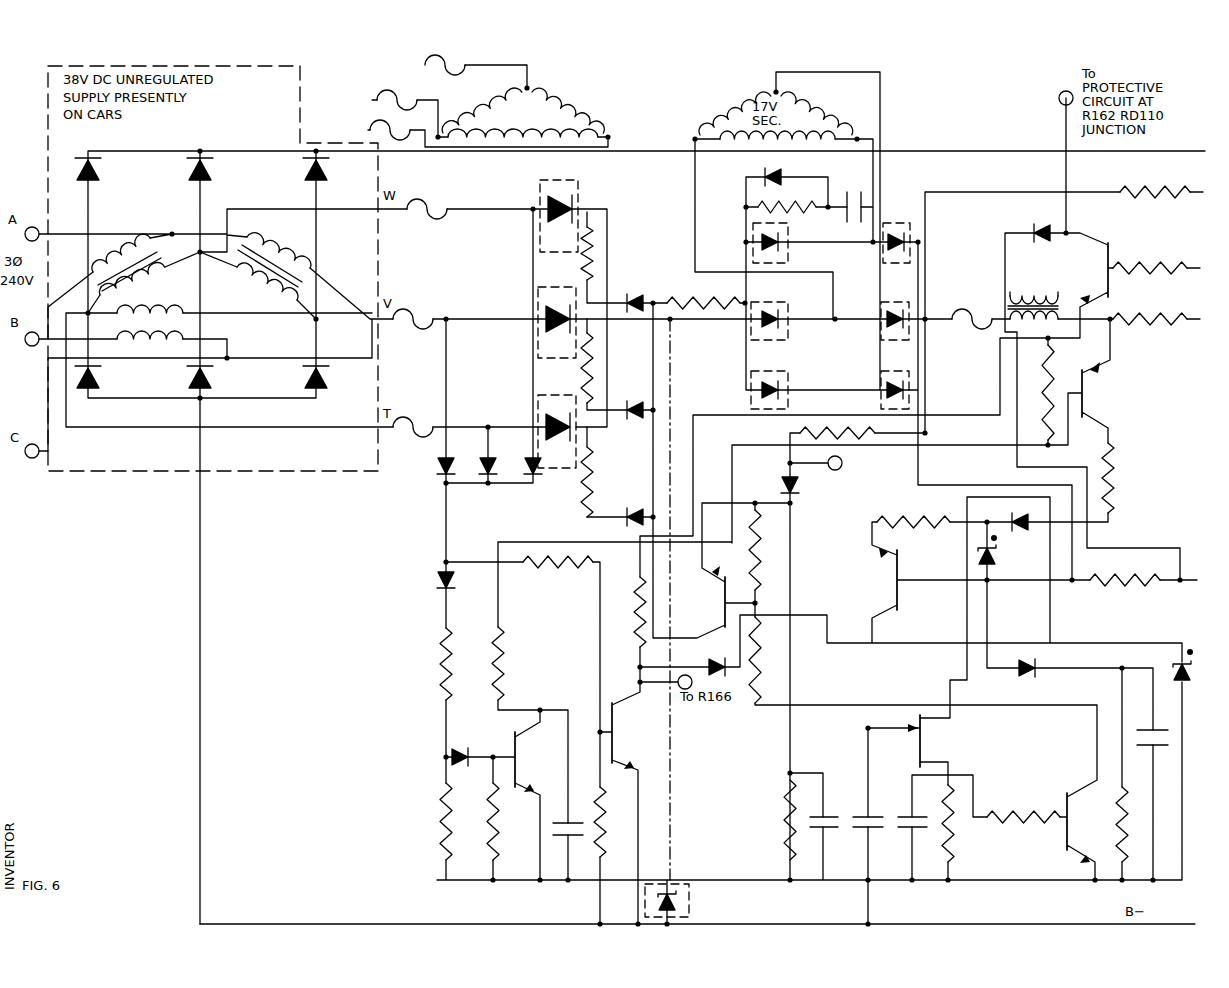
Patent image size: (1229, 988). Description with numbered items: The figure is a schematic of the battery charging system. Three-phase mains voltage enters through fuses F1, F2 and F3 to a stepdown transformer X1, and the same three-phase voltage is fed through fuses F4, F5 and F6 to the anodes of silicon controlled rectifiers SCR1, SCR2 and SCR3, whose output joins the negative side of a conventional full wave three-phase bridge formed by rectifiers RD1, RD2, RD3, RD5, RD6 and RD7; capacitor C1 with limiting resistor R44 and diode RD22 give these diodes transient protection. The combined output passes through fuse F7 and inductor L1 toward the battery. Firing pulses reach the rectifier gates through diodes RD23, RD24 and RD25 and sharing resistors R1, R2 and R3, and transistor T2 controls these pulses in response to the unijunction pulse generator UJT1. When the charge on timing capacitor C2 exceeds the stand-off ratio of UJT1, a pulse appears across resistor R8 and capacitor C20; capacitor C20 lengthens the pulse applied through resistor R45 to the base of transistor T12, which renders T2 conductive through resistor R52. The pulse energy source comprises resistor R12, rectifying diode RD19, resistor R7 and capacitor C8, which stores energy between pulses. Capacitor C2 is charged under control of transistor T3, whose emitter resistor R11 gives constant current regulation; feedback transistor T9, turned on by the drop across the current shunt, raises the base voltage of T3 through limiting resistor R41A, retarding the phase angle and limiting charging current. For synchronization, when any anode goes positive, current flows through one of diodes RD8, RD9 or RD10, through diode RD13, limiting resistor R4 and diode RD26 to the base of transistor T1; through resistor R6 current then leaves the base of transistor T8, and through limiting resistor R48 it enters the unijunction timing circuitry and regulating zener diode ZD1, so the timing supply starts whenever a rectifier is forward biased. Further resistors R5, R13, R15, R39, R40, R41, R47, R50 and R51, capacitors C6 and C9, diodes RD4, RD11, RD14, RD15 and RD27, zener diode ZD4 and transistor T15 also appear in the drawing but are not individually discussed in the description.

The fuse F1 is at (459, 60).
The fuse F2 is at (386, 93).
The fuse F3 is at (370, 125).
The fuse F4 is at (427, 205).
The fuse F5 is at (413, 314).
The fuse F6 is at (413, 423).
The fuse F7 is at (972, 314).
The 240V three-phase primary transformer X1 is at (525, 108).
The silicon controlled rectifier SCR1 is at (559, 206).
The silicon controlled rectifier SCR2 is at (557, 313).
The silicon controlled rectifier SCR3 is at (557, 423).
The sharing resistor R1 is at (595, 252).
The sharing resistor R2 is at (595, 368).
The sharing resistor R3 is at (595, 482).
The limiting resistor R4 is at (426, 664).
The resistor R5 is at (793, 580).
The resistor R6 is at (507, 663).
The resistor R7 is at (772, 820).
The resistor R8 is at (958, 823).
The emitter resistor R11 is at (913, 515).
The resistor R12 is at (820, 427).
The resistor R13 is at (1063, 392).
The resistor R15 is at (1150, 260).
The resistor R39 is at (558, 572).
The resistor R40 is at (608, 822).
The resistor R41 is at (1155, 186).
The limiting resistor R41A is at (1125, 572).
The limiting resistor R44 is at (787, 199).
The resistor R45 is at (1023, 808).
The resistor R47 is at (703, 296).
The limiting resistor R48 is at (1123, 478).
The resistor R50 is at (505, 821).
The resistor R51 is at (764, 550).
The resistor R52 is at (764, 660).
The capacitor C1 is at (856, 199).
The unijunction timing capacitor C2 is at (871, 812).
The capacitor C6 is at (1153, 747).
The capacitor C8 is at (819, 821).
The capacitor C9 is at (564, 845).
The capacitor C20 is at (914, 839).
The rectifying diode RD1 is at (750, 243).
The rectifying diode RD2 is at (770, 313).
The rectifying diode RD3 is at (770, 382).
The rectifier diode RD4 is at (686, 900).
The rectifying diode RD5 is at (896, 252).
The rectifying diode RD6 is at (895, 313).
The rectifying diode RD7 is at (895, 382).
The silicon rectifying diode RD8 is at (426, 477).
The silicon rectifying diode RD9 is at (498, 455).
The silicon rectifying diode RD10 is at (536, 480).
The rectifier diode RD11 is at (1026, 226).
The rectifier diode RD13 is at (421, 576).
The rectifier diode RD14 is at (1028, 679).
The rectifier diode RD15 is at (701, 661).
The rectifying diode RD19 is at (812, 476).
The diode RD22 is at (795, 173).
The rectifying diode RD23 is at (630, 295).
The rectifying diode RD24 is at (630, 402).
The rectifying diode RD25 is at (630, 510).
The rectifier diode RD26 is at (464, 750).
The rectifier diode RD27 is at (1011, 516).
The regulating zener diode ZD1 is at (1176, 654).
The zener diode ZD4 is at (1002, 555).
The transistor T1 is at (529, 759).
The transistor T2 is at (706, 602).
The timing current limiter transistor T3 is at (877, 580).
The transistor T8 is at (1094, 393).
The feedback transistor T9 is at (1092, 270).
The transistor T12 is at (1083, 821).
The transistor T15 is at (628, 733).
The unijunction pulse generating network UJT1 is at (939, 741).
The inductor L1 is at (1034, 297).